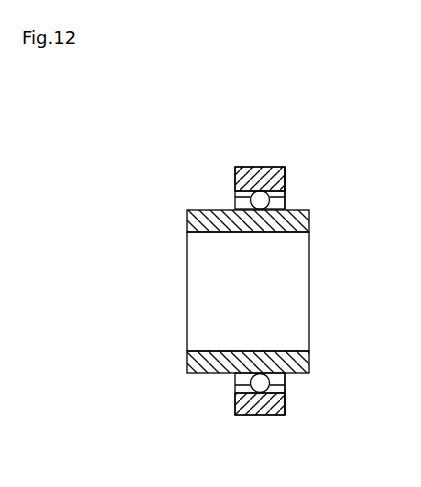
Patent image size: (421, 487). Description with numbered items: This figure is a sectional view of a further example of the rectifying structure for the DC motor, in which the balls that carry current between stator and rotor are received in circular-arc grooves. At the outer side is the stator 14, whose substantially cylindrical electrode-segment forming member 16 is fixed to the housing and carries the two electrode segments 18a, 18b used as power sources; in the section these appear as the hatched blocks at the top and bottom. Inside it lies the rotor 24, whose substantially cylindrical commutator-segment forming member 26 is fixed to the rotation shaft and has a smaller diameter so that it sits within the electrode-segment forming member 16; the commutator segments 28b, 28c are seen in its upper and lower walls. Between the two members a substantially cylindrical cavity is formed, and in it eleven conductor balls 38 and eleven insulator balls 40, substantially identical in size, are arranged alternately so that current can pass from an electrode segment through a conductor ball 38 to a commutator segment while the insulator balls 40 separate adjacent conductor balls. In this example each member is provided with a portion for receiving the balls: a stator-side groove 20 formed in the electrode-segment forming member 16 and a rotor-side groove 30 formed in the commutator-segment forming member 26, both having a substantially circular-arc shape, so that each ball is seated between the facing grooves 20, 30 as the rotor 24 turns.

The stator 14 is at (277, 293).
The electrode-segment forming member 16 is at (235, 180).
The electrode segment 18a is at (267, 176).
The electrode segment 18b is at (268, 406).
The stator-side groove 20 is at (268, 188).
The rotor 24 is at (230, 286).
The commutator-segment forming member 26 is at (187, 224).
The commutator segment 28b is at (213, 232).
The commutator segment 28c is at (213, 352).
The rotor-side groove 30 is at (277, 233).
The conductor ball 38 is at (316, 296).
The insulator ball 40 is at (263, 200).